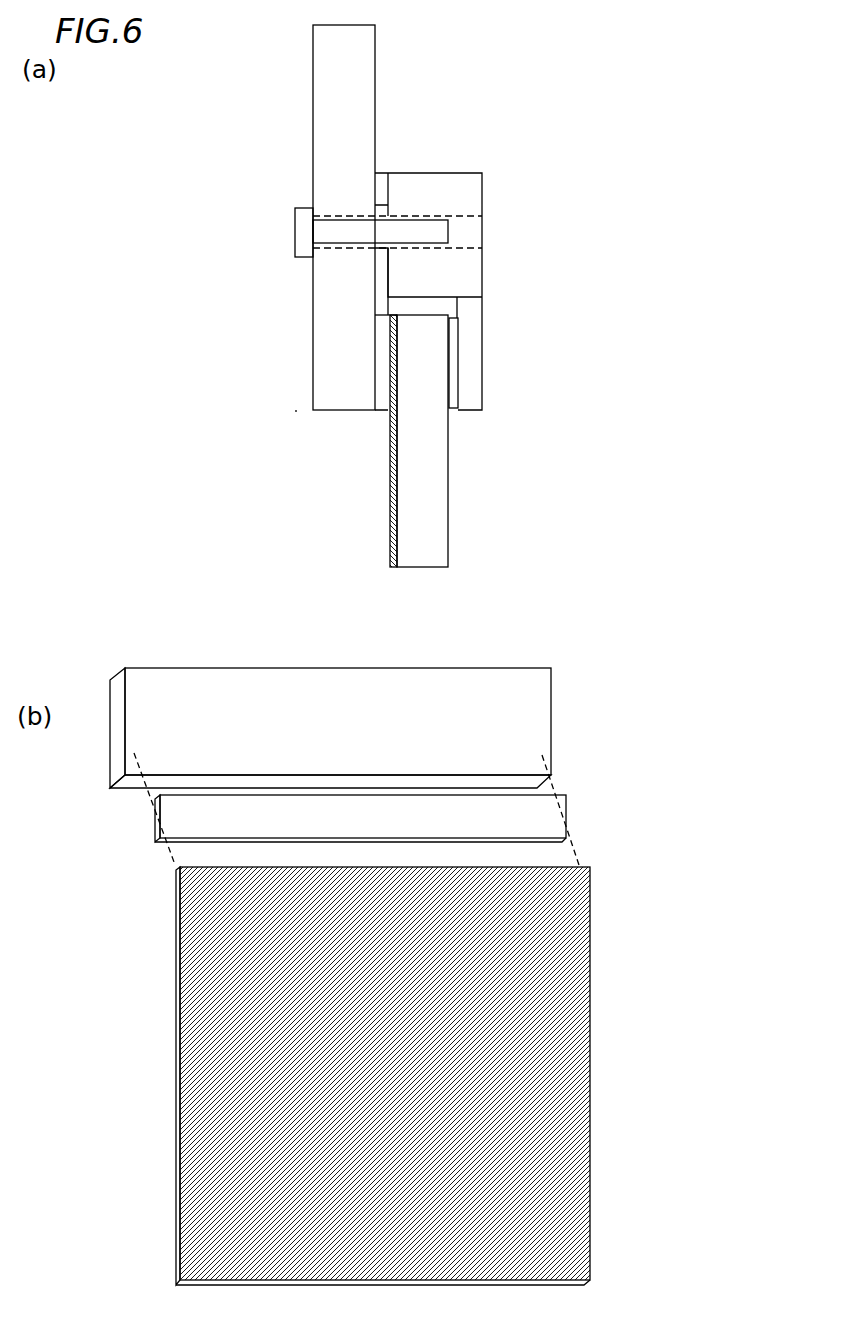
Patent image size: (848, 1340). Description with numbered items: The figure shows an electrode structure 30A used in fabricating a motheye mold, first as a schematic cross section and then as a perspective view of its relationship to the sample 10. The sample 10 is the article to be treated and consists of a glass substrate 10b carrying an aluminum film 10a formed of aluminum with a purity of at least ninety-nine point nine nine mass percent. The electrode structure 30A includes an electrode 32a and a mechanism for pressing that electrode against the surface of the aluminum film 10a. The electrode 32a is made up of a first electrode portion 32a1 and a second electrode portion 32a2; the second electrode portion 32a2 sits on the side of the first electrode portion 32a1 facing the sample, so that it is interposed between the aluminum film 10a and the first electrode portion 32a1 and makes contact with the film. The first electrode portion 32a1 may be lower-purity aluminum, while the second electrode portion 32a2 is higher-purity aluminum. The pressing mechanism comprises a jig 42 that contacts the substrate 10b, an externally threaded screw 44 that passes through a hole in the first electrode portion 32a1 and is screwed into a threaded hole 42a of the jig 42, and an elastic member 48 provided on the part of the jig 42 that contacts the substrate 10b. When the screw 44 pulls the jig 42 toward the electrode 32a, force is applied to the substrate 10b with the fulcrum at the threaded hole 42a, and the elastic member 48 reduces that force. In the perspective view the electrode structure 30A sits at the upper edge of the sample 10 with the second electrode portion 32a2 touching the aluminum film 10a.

The electrode structure 30A is at (504, 353).
The sample 10 is at (448, 571).
The aluminum film 10a is at (388, 493).
The glass substrate 10b is at (435, 513).
The electrode 32a is at (188, 375).
The first electrode portion 32a1 is at (327, 377).
The second electrode portion 32a2 is at (380, 407).
The jig 42 is at (470, 190).
The threaded hole 42a is at (512, 235).
The externally threaded screw 44 is at (303, 223).
The elastic member 48 is at (453, 412).